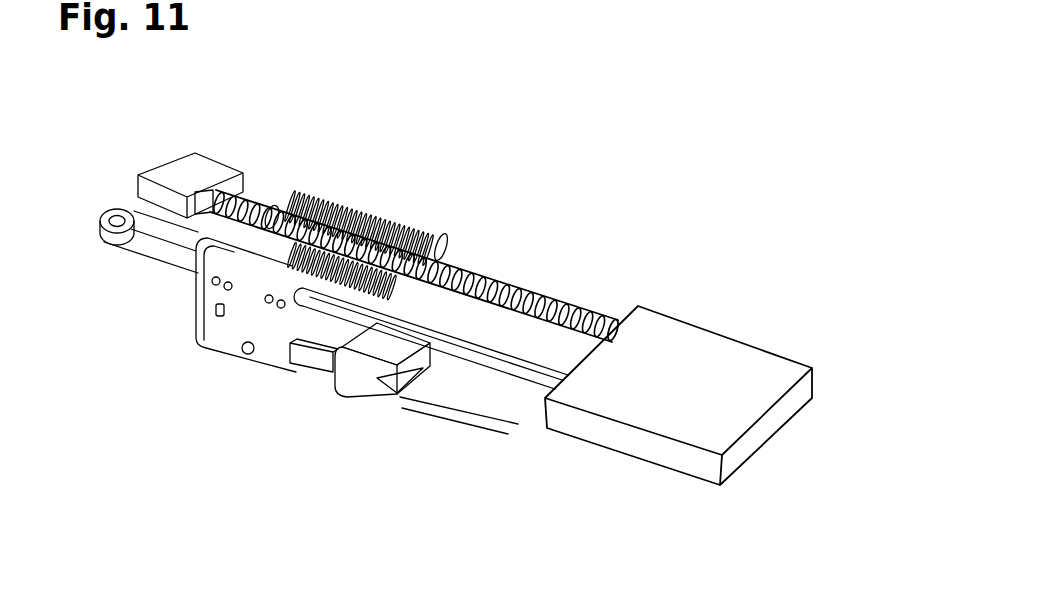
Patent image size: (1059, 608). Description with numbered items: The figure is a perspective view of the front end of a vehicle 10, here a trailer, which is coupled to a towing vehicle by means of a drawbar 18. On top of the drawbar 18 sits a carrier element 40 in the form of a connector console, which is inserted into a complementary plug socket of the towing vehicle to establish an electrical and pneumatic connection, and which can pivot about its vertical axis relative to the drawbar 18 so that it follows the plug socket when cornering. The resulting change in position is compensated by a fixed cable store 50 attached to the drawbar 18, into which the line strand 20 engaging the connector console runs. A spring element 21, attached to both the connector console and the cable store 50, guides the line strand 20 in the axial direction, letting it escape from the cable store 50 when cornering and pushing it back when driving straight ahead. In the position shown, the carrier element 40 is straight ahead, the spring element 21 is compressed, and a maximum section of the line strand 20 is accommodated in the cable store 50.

The vehicle 10 is at (726, 297).
The drawbar 18 is at (453, 378).
The line strand 20 is at (542, 297).
The spring element 21 is at (492, 280).
The carrier element 40 is at (213, 165).
The cable store 50 is at (695, 391).